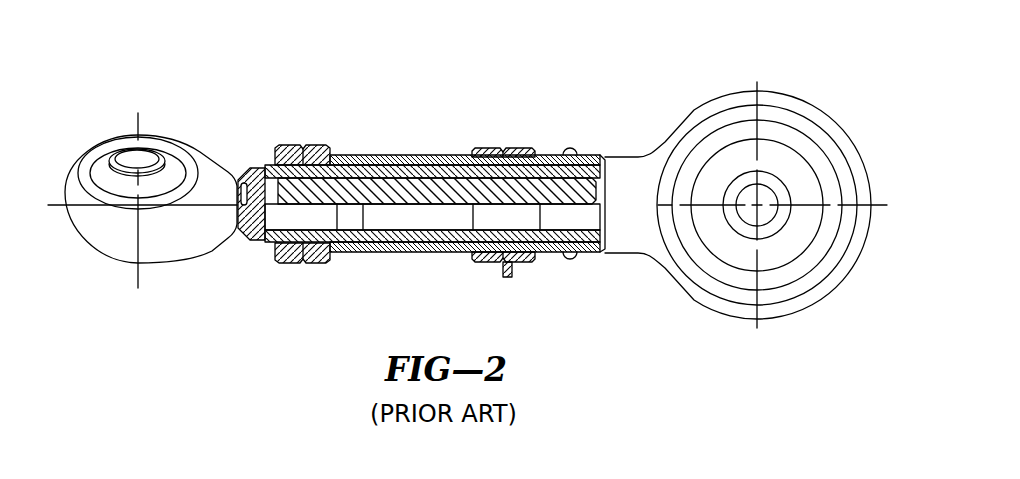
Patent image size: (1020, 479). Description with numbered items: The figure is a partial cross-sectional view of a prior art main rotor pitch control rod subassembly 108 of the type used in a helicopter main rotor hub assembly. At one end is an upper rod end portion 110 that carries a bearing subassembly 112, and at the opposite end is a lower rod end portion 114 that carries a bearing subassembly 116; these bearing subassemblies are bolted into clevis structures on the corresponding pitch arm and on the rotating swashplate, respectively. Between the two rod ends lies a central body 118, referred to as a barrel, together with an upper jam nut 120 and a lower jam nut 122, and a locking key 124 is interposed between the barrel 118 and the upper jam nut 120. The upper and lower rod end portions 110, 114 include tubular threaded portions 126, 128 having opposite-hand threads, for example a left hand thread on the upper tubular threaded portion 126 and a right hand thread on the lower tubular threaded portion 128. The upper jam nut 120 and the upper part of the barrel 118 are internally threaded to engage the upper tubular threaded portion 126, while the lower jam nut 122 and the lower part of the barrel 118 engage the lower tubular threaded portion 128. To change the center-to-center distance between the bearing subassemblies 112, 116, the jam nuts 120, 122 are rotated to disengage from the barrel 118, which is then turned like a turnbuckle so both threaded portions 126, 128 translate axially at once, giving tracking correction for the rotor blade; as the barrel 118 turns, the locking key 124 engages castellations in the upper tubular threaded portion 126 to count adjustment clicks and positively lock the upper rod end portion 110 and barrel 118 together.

The main rotor pitch control rod subassembly 108 is at (454, 176).
The upper rod end portion 110 is at (746, 165).
The bearing subassembly 112 is at (775, 188).
The lower rod end portion 114 is at (168, 276).
The bearing subassembly 116 is at (153, 151).
The central body 118 is at (425, 156).
The upper jam nut 120 is at (536, 152).
The lower jam nut 122 is at (292, 146).
The locking key 124 is at (504, 277).
The upper tubular threaded portion 126 is at (602, 160).
The lower tubular threaded portion 128 is at (337, 172).